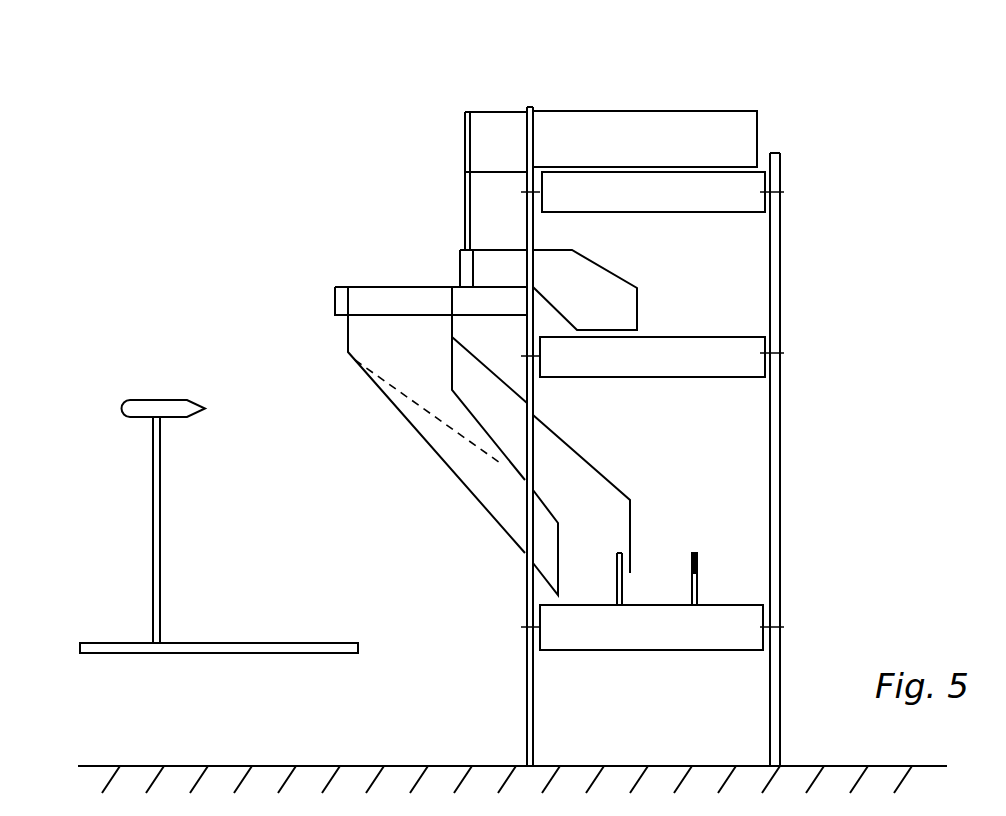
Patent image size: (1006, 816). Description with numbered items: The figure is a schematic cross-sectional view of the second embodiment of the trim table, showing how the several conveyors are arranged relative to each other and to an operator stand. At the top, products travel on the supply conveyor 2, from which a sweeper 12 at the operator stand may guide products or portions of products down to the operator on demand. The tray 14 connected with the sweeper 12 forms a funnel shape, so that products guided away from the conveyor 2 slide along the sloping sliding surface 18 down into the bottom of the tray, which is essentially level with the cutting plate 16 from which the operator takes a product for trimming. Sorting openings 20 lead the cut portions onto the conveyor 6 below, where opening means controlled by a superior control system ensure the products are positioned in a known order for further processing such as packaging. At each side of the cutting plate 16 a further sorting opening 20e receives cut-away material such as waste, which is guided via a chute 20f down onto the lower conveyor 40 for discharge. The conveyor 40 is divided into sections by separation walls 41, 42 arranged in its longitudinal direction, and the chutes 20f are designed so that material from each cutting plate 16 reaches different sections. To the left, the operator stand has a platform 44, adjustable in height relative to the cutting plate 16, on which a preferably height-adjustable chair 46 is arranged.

The conveyor 2 is at (732, 195).
The conveyor 6 is at (715, 353).
The sweeper 12 is at (627, 123).
The tray 14 is at (490, 135).
The cutting plate 16 is at (395, 307).
The sloping sliding surface 18 is at (482, 197).
The sorting opening 20 is at (462, 273).
The further sorting opening 20e is at (413, 297).
The chute 20f is at (465, 487).
The conveyor 40 is at (732, 623).
The separation wall 41 is at (625, 572).
The separation wall 42 is at (697, 555).
The platform 44 is at (267, 648).
The chair 46 is at (155, 407).